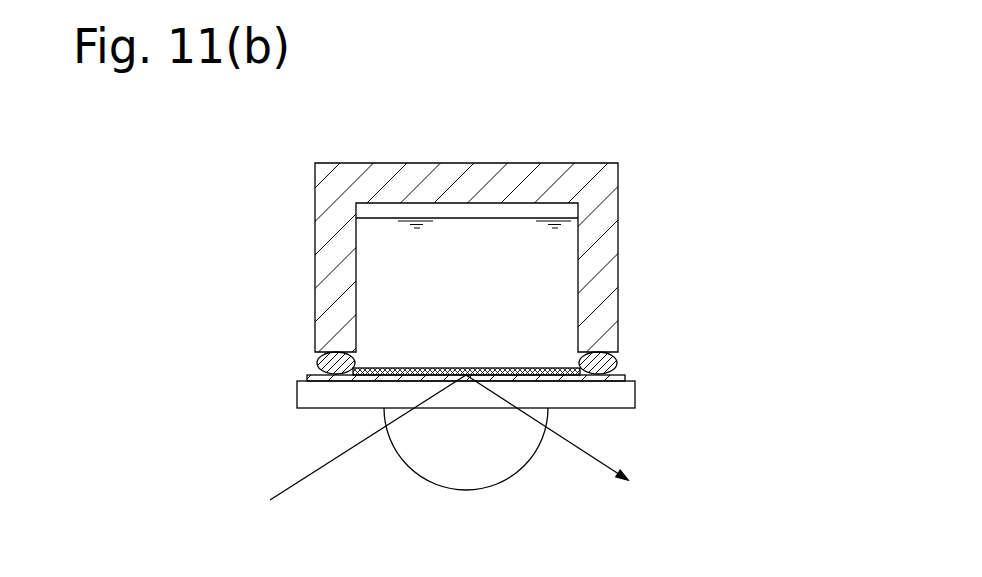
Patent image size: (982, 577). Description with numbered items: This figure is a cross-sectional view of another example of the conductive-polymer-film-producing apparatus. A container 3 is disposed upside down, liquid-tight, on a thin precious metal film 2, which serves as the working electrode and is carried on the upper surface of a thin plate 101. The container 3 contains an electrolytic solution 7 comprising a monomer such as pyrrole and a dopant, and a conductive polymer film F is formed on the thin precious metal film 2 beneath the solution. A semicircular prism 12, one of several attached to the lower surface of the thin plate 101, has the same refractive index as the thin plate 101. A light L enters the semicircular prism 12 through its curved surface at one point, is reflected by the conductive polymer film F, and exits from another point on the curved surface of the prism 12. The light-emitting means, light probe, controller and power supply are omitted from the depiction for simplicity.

The container 3 is at (610, 228).
The electrolytic solution 7 is at (496, 264).
The conductive polymer film F is at (421, 367).
The thin precious metal film 2 is at (620, 378).
The thin plate 101 is at (630, 394).
The semicircular prism 12 is at (478, 478).
The light L is at (293, 482).